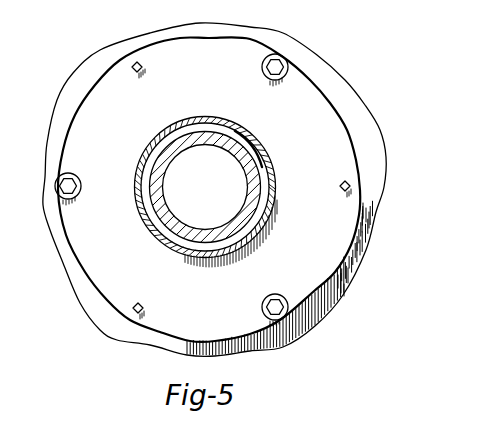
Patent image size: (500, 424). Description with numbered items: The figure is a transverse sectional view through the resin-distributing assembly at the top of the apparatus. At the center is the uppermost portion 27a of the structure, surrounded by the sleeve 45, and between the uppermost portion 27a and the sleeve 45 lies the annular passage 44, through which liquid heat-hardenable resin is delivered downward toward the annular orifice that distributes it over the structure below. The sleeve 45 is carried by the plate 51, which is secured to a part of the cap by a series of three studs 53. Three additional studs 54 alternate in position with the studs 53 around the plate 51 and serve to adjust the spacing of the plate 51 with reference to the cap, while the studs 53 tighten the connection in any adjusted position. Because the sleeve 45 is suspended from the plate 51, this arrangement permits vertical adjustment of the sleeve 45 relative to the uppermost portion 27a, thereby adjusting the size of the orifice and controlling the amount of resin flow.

The lower plate 51 is at (85, 255).
The studs 53 is at (283, 67).
The additional studs 54 is at (131, 67).
The sleeve 45 is at (168, 128).
The annular passage 44 is at (180, 245).
The uppermost portion of the structure 27a is at (257, 165).